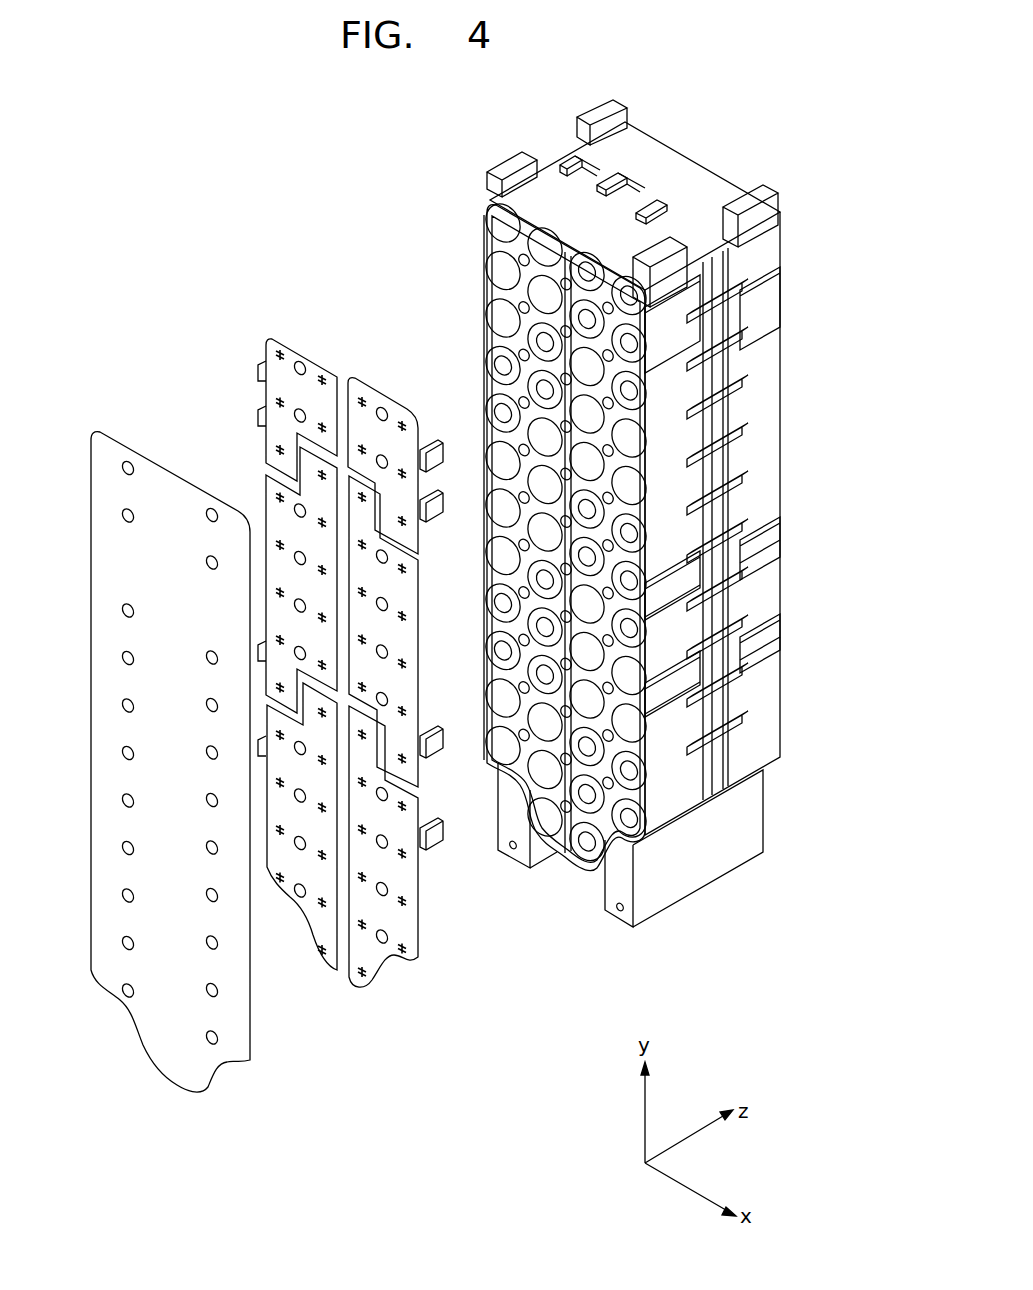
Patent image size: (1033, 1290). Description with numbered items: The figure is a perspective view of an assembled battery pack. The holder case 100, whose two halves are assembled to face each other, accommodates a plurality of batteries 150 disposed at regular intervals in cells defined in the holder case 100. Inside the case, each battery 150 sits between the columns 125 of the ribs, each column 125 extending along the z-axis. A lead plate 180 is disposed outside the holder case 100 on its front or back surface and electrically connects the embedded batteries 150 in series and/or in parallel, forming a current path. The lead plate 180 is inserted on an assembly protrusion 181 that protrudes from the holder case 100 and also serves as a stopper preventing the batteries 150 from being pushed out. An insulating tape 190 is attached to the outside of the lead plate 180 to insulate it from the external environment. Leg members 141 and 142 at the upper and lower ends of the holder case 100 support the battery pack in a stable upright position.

The holder case 100 is at (683, 94).
The column 125 is at (495, 258).
The leg member 141 is at (732, 858).
The leg member 142 is at (597, 107).
The battery 150 is at (503, 223).
The lead plate 180 is at (360, 980).
The assembly protrusion 181 is at (518, 291).
The insulating tape 190 is at (165, 1063).